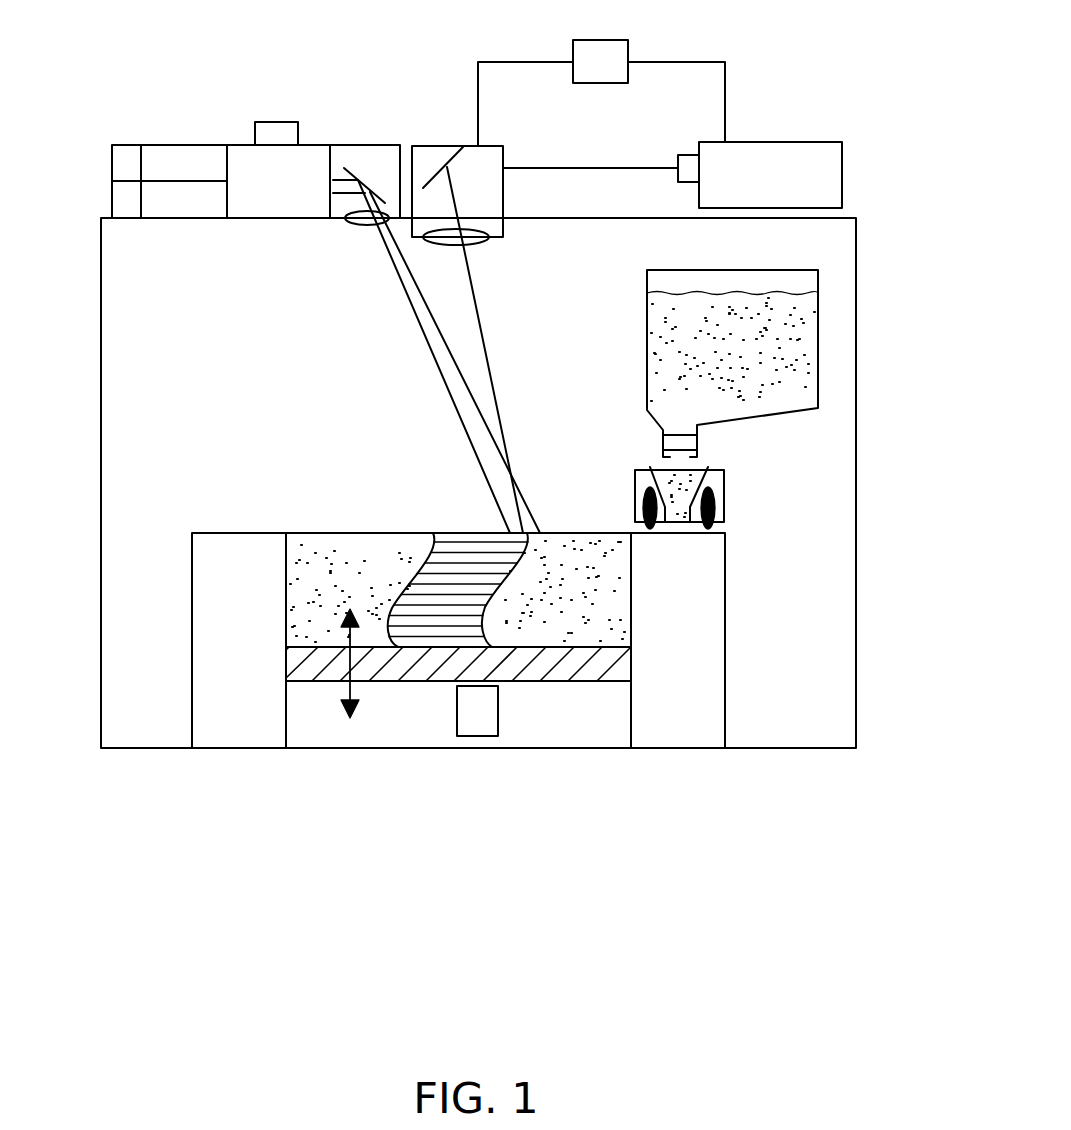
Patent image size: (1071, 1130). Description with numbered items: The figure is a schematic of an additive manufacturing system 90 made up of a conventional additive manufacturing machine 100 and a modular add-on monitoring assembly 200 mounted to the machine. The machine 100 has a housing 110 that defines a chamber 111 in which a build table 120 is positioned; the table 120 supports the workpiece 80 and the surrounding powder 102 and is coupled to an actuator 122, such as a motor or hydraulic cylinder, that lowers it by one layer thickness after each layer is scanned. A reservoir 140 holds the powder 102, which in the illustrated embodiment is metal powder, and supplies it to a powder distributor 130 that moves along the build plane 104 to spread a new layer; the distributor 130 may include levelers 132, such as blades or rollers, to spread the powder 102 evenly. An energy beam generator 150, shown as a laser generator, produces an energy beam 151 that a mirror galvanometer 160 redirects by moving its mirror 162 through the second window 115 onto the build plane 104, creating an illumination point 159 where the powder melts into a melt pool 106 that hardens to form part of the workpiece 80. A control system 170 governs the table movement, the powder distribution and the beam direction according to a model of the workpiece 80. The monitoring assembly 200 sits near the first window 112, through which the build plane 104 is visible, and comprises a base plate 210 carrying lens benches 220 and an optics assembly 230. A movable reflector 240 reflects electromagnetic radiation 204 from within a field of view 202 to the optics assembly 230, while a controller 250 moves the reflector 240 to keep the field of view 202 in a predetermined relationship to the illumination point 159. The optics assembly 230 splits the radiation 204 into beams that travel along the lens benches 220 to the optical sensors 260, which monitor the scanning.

The additive manufacturing system 90 is at (104, 46).
The additive manufacturing machine 100 is at (912, 188).
The housing 110 is at (101, 258).
The chamber 111 is at (130, 335).
The first window 112 is at (357, 238).
The second window 115 is at (486, 243).
The build table 120 is at (300, 655).
The actuator 122 is at (498, 705).
The powder distributor 130 is at (715, 485).
The levelers 132 is at (716, 524).
The reservoir 140 is at (818, 350).
The powder 102 is at (818, 298).
The build plane 104 is at (388, 525).
The melt pool 106 is at (535, 541).
The workpiece 80 is at (494, 583).
The energy beam generator 150 is at (768, 142).
The energy beam 151 is at (597, 168).
The illumination point 159 is at (534, 514).
The mirror galvanometer 160 is at (459, 191).
The mirror 162 is at (435, 170).
The control system 170 is at (573, 47).
The monitoring assembly 200 is at (239, 71).
The field of view 202 is at (508, 522).
The electromagnetic radiation 204 is at (427, 343).
The base plate 210 is at (172, 218).
The lens benches 220 is at (227, 164).
The optics assembly 230 is at (237, 144).
The movable reflector 240 is at (365, 145).
The controller 250 is at (285, 122).
The optical sensors 260 is at (112, 164).